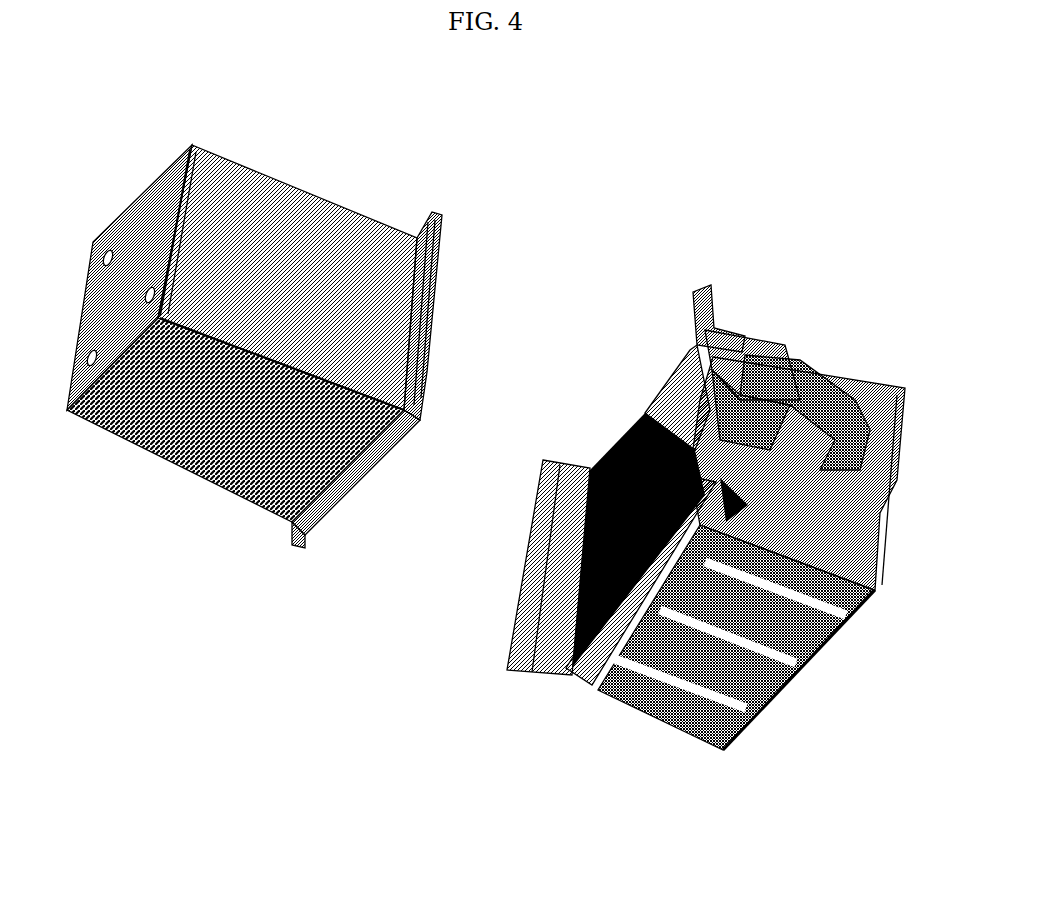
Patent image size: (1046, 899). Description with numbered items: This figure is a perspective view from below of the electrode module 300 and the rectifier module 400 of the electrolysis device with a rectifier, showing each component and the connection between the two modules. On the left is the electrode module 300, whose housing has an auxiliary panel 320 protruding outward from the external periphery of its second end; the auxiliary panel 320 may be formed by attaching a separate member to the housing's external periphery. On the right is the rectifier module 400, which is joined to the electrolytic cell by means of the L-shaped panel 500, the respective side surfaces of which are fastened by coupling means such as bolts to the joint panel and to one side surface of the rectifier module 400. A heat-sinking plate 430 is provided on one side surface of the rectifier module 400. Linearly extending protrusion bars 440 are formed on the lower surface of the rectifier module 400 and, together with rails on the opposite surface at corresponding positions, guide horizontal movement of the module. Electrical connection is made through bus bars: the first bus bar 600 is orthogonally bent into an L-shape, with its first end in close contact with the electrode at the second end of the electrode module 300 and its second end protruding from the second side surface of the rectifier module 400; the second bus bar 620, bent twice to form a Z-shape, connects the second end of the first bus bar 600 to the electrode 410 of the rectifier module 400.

The electrode module 300 is at (284, 200).
The auxiliary panel 320 is at (450, 218).
The rectifier module 400 is at (649, 283).
The electrode 410 is at (836, 398).
The heat-sinking plate 430 is at (578, 674).
The protrusion bar 440 is at (678, 693).
The L-shaped panel 500 is at (533, 660).
The first bus bar 600 is at (585, 472).
The second bus bar 620 is at (780, 365).